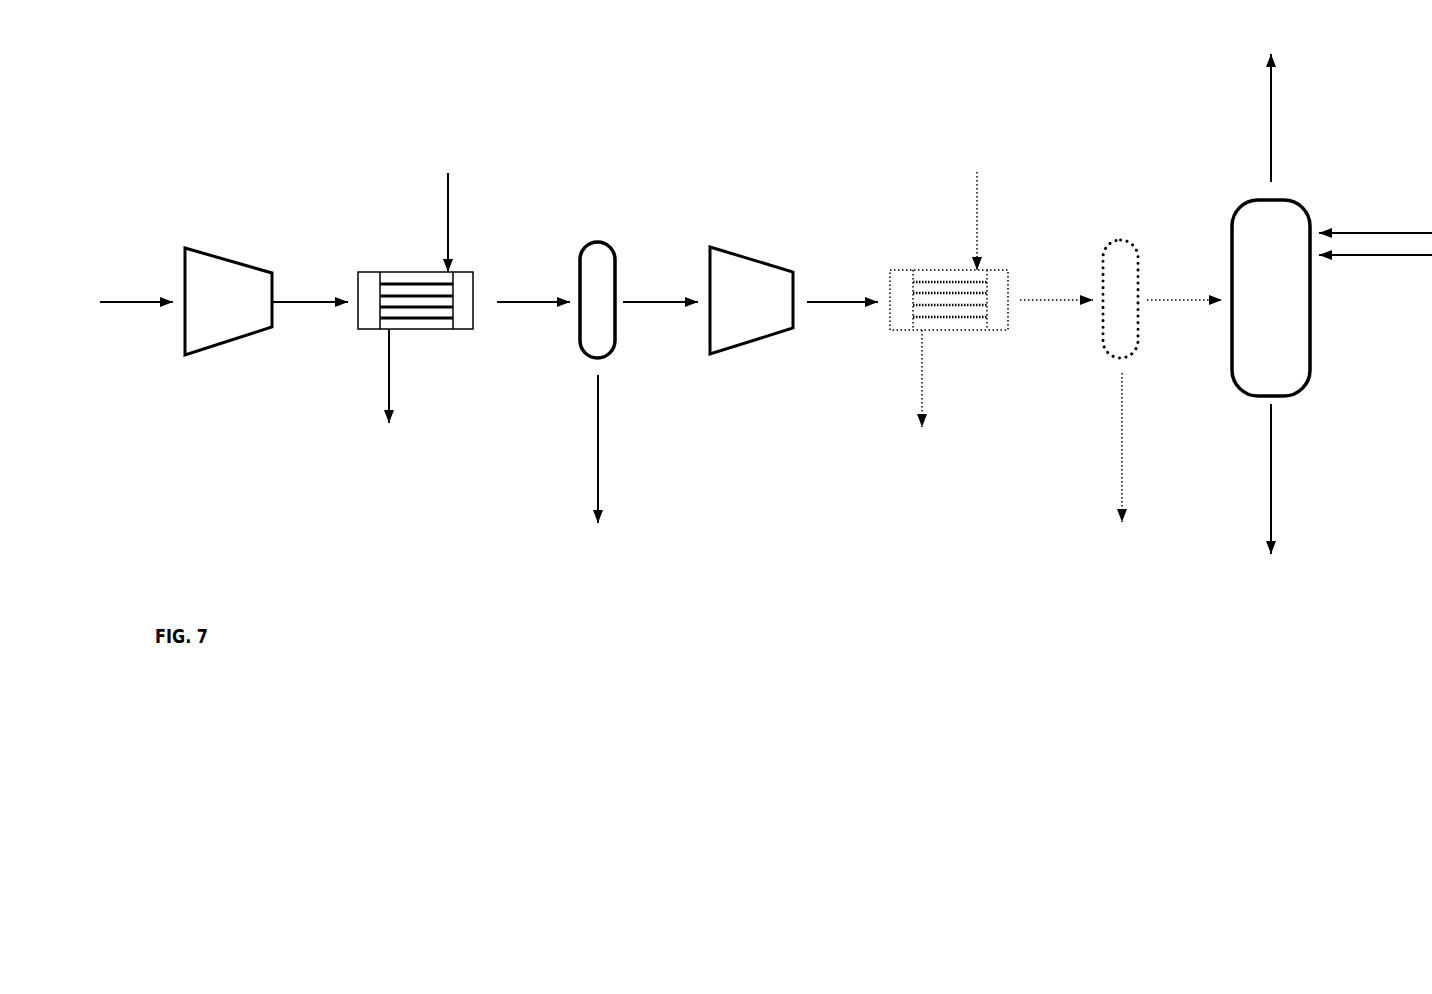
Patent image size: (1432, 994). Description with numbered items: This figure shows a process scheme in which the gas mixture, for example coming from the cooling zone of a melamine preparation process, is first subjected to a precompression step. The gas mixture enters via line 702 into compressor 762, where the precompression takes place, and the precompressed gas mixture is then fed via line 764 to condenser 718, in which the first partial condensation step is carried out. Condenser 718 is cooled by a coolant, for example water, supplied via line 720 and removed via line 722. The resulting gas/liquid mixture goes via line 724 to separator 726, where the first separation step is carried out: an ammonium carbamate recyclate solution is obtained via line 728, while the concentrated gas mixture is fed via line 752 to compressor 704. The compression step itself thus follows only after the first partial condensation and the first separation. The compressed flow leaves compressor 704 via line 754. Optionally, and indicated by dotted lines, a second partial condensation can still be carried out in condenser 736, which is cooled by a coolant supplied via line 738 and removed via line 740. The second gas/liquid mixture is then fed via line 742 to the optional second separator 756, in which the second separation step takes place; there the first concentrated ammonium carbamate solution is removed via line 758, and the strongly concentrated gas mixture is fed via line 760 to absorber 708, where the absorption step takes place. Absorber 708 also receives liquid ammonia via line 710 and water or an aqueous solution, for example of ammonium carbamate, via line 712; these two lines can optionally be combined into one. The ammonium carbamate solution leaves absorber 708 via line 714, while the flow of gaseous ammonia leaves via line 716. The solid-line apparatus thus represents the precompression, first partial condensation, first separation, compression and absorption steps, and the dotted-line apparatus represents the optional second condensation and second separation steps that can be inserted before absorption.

The line 702 is at (136, 290).
The compressor 762 is at (243, 314).
The line 764 is at (310, 290).
The condenser 718 is at (418, 268).
The line 720 is at (466, 222).
The line 722 is at (407, 376).
The line 724 is at (533, 290).
The separator 726 is at (623, 232).
The line 752 is at (660, 290).
The line 728 is at (620, 449).
The compressor 704 is at (773, 313).
The line 754 is at (842, 290).
The condenser 736 is at (965, 265).
The line 738 is at (995, 221).
The line 740 is at (940, 378).
The line 742 is at (1056, 288).
The second separator 756 is at (1141, 232).
The line 760 is at (1184, 288).
The line 758 is at (1147, 447).
The absorber 708 is at (1286, 310).
The line 716 is at (1293, 118).
The line 710 is at (1375, 221).
The line 712 is at (1375, 274).
The line 714 is at (1293, 479).